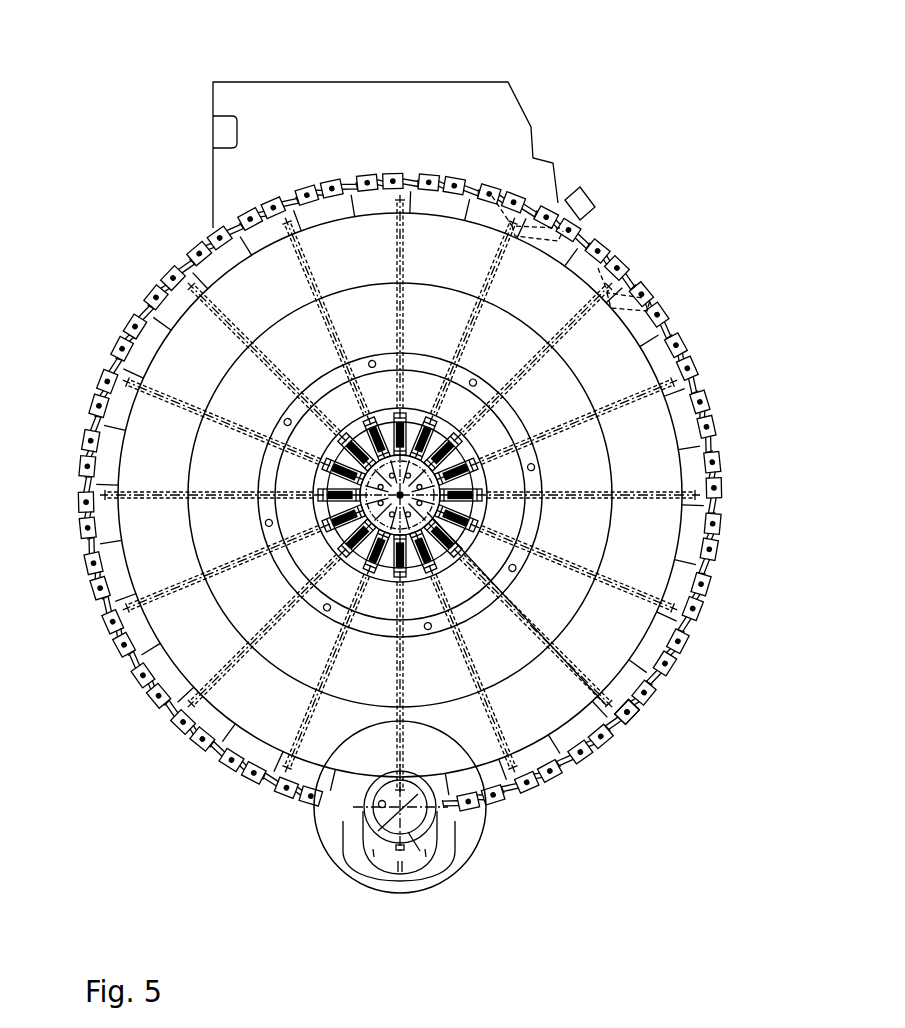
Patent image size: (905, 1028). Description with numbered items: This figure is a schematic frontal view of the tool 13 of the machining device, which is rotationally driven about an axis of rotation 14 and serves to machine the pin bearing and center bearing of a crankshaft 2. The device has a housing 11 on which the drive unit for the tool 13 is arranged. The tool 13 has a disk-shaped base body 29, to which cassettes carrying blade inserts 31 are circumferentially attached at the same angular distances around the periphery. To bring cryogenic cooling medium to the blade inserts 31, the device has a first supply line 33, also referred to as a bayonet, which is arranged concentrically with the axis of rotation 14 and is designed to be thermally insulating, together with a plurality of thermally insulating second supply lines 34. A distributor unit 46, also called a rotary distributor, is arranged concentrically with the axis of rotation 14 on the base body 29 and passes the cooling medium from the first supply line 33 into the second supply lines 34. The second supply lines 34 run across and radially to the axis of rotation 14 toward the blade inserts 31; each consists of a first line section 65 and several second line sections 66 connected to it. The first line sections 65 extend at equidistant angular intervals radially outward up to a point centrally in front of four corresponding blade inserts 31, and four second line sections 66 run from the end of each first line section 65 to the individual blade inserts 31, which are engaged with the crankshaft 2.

The crankshaft 2 is at (356, 853).
The housing 11 is at (363, 93).
The tool 13 is at (597, 224).
The axis of rotation 14 is at (418, 503).
The base body 29 is at (578, 293).
The blade inserts 31 is at (653, 292).
The first supply line 33 is at (186, 740).
The second supply lines 34 is at (596, 315).
The distributor unit 46 is at (632, 720).
The first line section 65 is at (492, 270).
The second line sections 66 is at (538, 222).